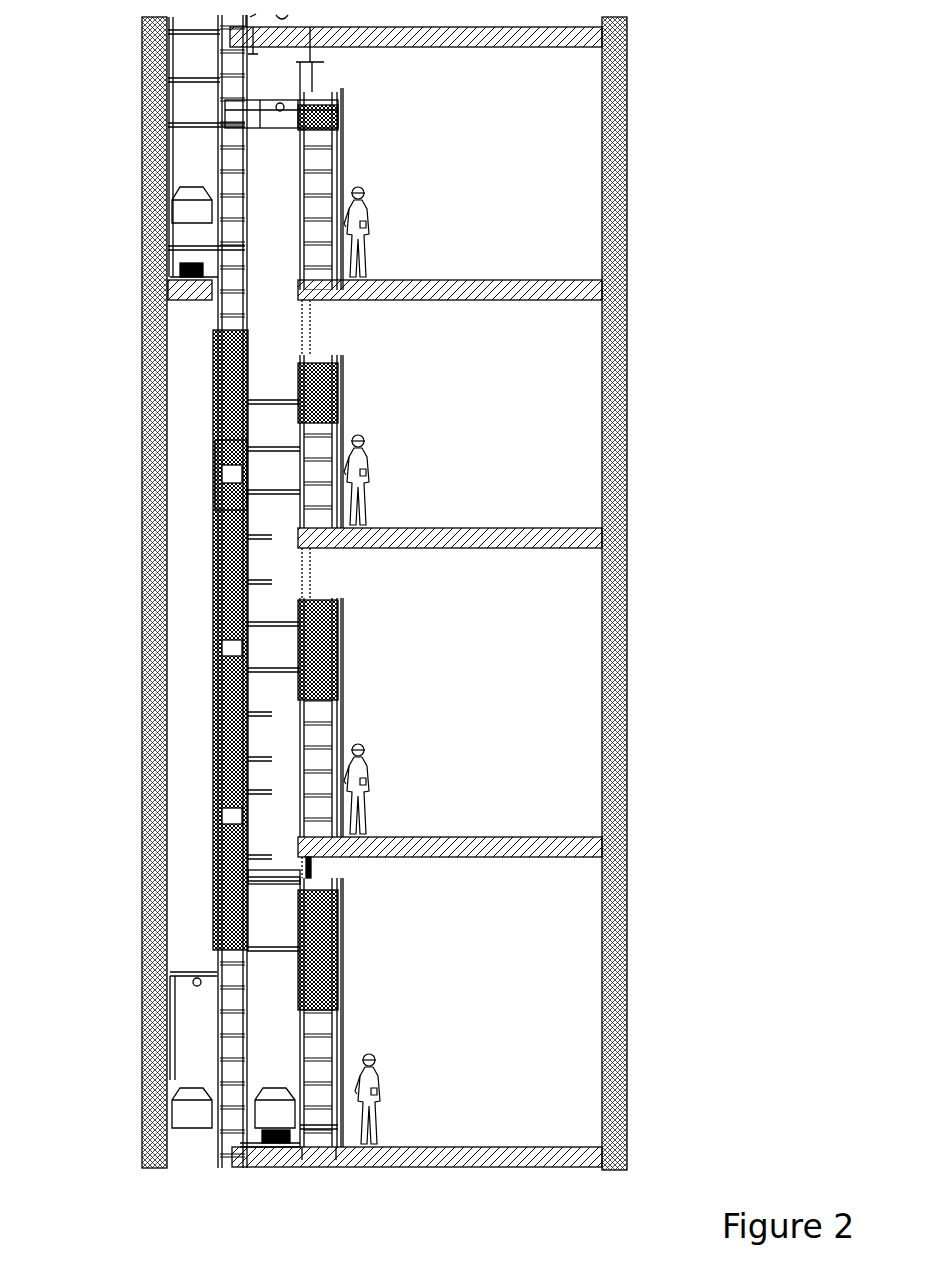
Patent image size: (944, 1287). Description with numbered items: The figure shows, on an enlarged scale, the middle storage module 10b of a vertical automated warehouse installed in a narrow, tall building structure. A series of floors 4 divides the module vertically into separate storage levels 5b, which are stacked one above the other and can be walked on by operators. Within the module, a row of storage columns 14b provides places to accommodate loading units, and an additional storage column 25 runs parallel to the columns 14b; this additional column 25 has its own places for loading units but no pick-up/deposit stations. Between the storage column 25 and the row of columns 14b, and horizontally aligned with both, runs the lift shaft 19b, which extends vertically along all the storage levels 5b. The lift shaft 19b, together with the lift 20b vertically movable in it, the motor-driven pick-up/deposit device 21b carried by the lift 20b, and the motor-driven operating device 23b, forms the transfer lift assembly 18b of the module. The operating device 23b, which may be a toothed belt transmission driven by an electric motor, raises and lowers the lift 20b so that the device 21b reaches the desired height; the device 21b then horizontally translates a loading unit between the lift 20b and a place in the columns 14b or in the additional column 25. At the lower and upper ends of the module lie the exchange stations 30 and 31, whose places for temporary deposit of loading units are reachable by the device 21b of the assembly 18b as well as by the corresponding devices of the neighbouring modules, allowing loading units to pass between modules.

The floor 4 is at (521, 42).
The storage level 5b is at (410, 212).
The storage module 10b is at (186, 666).
The storage column 14b is at (352, 93).
The transfer lift assembly 18b is at (261, 1152).
The lift shaft 19b is at (286, 877).
The lift 20b is at (250, 1150).
The pick-up/deposit device 21b is at (314, 1143).
The operating device 23b is at (280, 1150).
The additional storage column 25 is at (207, 478).
The exchange station 30 is at (191, 1062).
The exchange station 31 is at (190, 158).